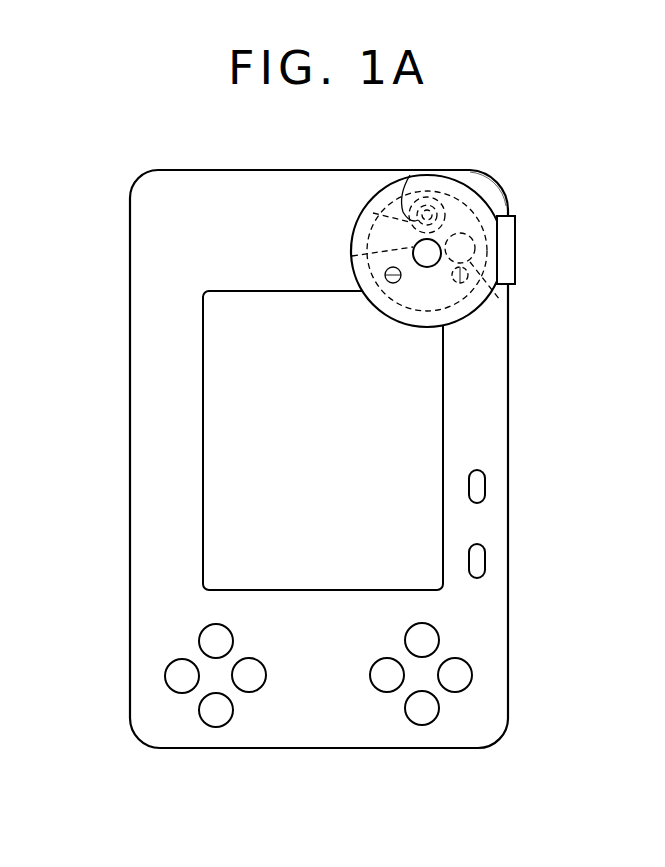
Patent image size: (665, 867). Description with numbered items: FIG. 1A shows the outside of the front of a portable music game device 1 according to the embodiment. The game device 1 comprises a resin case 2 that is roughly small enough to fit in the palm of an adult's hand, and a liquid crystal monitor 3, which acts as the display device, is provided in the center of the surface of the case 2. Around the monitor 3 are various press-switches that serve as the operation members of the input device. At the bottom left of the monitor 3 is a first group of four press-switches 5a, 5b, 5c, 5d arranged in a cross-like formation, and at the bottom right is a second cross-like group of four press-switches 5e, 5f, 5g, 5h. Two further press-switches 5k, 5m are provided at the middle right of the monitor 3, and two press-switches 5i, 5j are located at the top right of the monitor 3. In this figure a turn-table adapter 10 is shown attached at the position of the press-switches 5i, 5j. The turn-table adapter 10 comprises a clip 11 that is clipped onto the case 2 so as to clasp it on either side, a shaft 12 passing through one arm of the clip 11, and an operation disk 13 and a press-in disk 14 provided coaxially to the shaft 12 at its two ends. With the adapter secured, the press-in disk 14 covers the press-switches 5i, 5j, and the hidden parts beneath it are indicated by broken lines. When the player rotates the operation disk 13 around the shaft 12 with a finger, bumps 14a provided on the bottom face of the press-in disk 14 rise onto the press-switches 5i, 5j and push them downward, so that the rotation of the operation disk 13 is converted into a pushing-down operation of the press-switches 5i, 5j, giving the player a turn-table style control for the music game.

The game device 1 is at (105, 175).
The case 2 is at (130, 310).
The liquid crystal monitor 3 is at (223, 410).
The press-switch 5a is at (207, 638).
The press-switch 5b is at (215, 717).
The press-switch 5c is at (177, 680).
The press-switch 5d is at (253, 683).
The press-switch 5e is at (433, 636).
The press-switch 5f is at (423, 717).
The press-switch 5g is at (383, 682).
The press-switch 5h is at (460, 677).
The press-switch 5i is at (410, 175).
The press-switch 5j is at (493, 300).
The press-switch 5k is at (480, 487).
The press-switch 5m is at (480, 562).
The turn-table adapter 10 is at (470, 184).
The clip 11 is at (515, 249).
The shaft 12 is at (425, 258).
The operation disk 13 is at (493, 203).
The press-in disk 14 is at (373, 213).
The bumps 14a is at (386, 272).